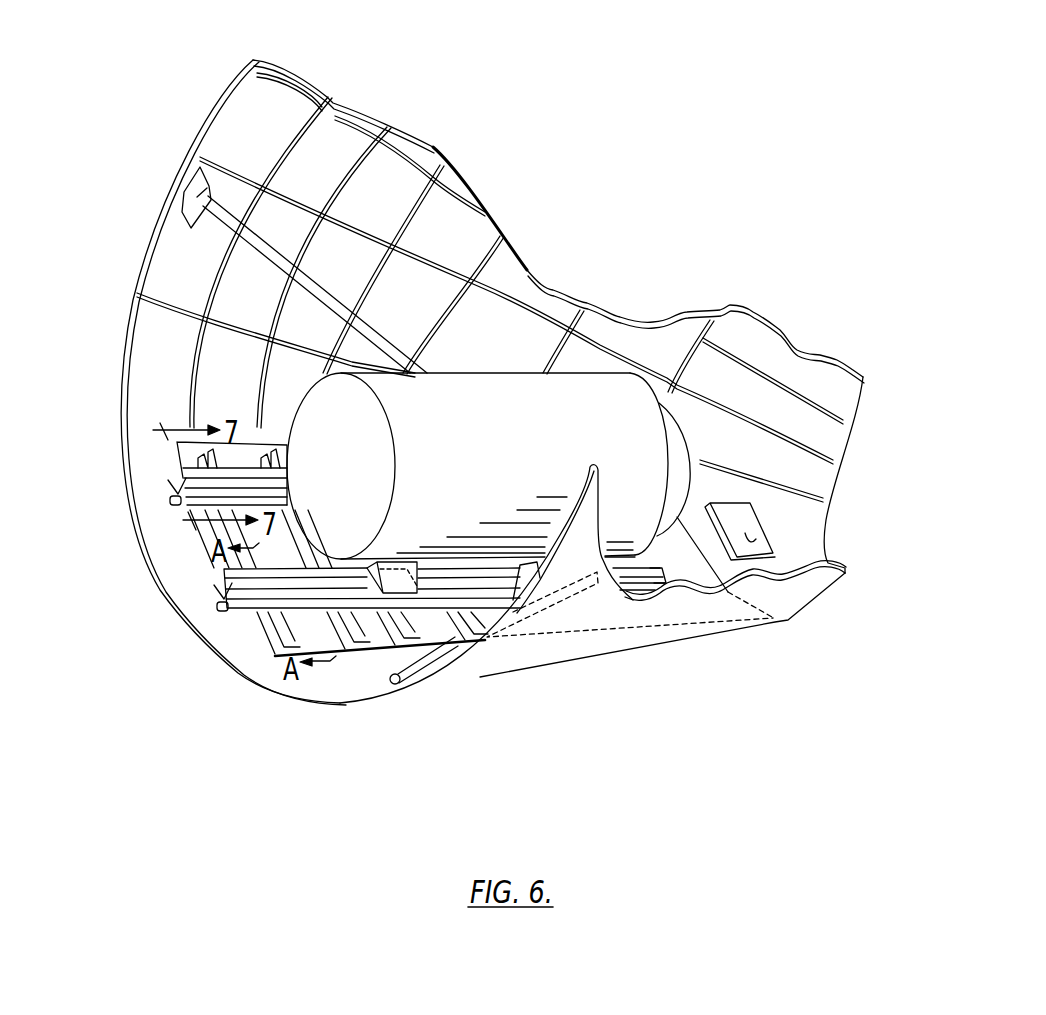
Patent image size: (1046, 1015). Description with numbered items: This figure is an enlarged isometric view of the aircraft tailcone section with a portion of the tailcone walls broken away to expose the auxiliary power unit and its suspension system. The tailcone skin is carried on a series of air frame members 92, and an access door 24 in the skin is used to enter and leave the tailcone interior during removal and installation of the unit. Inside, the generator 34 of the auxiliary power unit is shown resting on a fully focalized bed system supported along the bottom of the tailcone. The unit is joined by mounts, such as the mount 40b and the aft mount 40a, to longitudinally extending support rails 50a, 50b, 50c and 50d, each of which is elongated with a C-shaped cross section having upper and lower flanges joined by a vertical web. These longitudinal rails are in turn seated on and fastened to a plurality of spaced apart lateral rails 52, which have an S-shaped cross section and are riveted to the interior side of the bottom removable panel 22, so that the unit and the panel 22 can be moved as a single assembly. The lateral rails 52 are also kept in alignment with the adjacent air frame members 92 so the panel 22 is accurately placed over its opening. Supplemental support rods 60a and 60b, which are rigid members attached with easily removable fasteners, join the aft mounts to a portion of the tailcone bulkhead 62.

The air frame member 92 is at (430, 153).
The tailcone bulkhead 62 is at (197, 190).
The supplemental support rod 60b is at (313, 287).
The generator 34 is at (490, 390).
The access door 24 is at (764, 532).
The longitudinal support rail 50a is at (175, 470).
The longitudinal support rail 50b is at (178, 475).
The longitudinal support rail 50c is at (218, 590).
The longitudinal support rail 50d is at (222, 596).
The bottom removable panel 22 is at (262, 648).
The lateral rail 52 is at (343, 645).
The mount 40b is at (399, 606).
The aft mount 40a is at (513, 607).
The supplemental support rod 60a is at (557, 607).